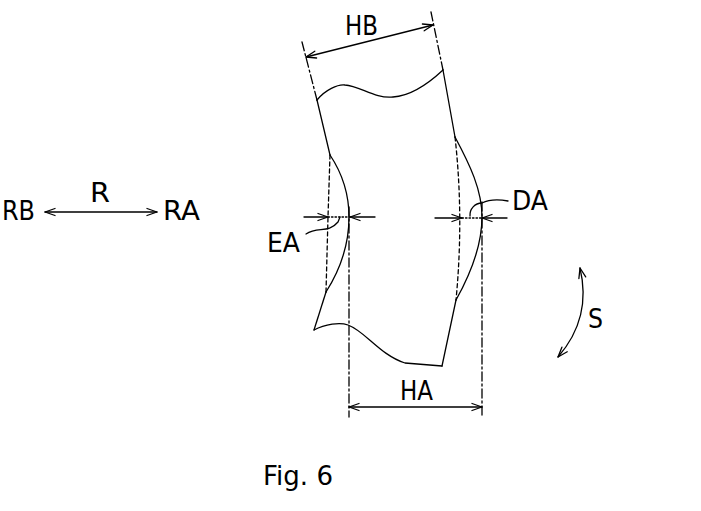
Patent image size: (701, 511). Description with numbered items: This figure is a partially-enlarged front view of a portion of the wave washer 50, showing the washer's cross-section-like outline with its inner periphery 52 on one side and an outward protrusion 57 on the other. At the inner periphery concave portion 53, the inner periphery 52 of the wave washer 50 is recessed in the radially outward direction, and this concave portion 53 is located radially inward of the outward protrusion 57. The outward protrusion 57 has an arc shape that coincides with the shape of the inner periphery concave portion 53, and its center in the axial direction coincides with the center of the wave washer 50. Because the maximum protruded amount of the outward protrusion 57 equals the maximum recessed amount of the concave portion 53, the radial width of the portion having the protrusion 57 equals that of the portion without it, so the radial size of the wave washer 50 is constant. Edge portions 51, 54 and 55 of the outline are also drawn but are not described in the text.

The wave washer 50 is at (425, 203).
The first side surface (straight portion) 51 is at (452, 98).
The inner periphery 52 is at (318, 112).
The inner periphery concave portion 53 is at (329, 177).
The second side surface upper straight portion 54 is at (333, 132).
The second side surface lower straight portion 55 is at (333, 301).
The outward protrusion 57 is at (473, 164).